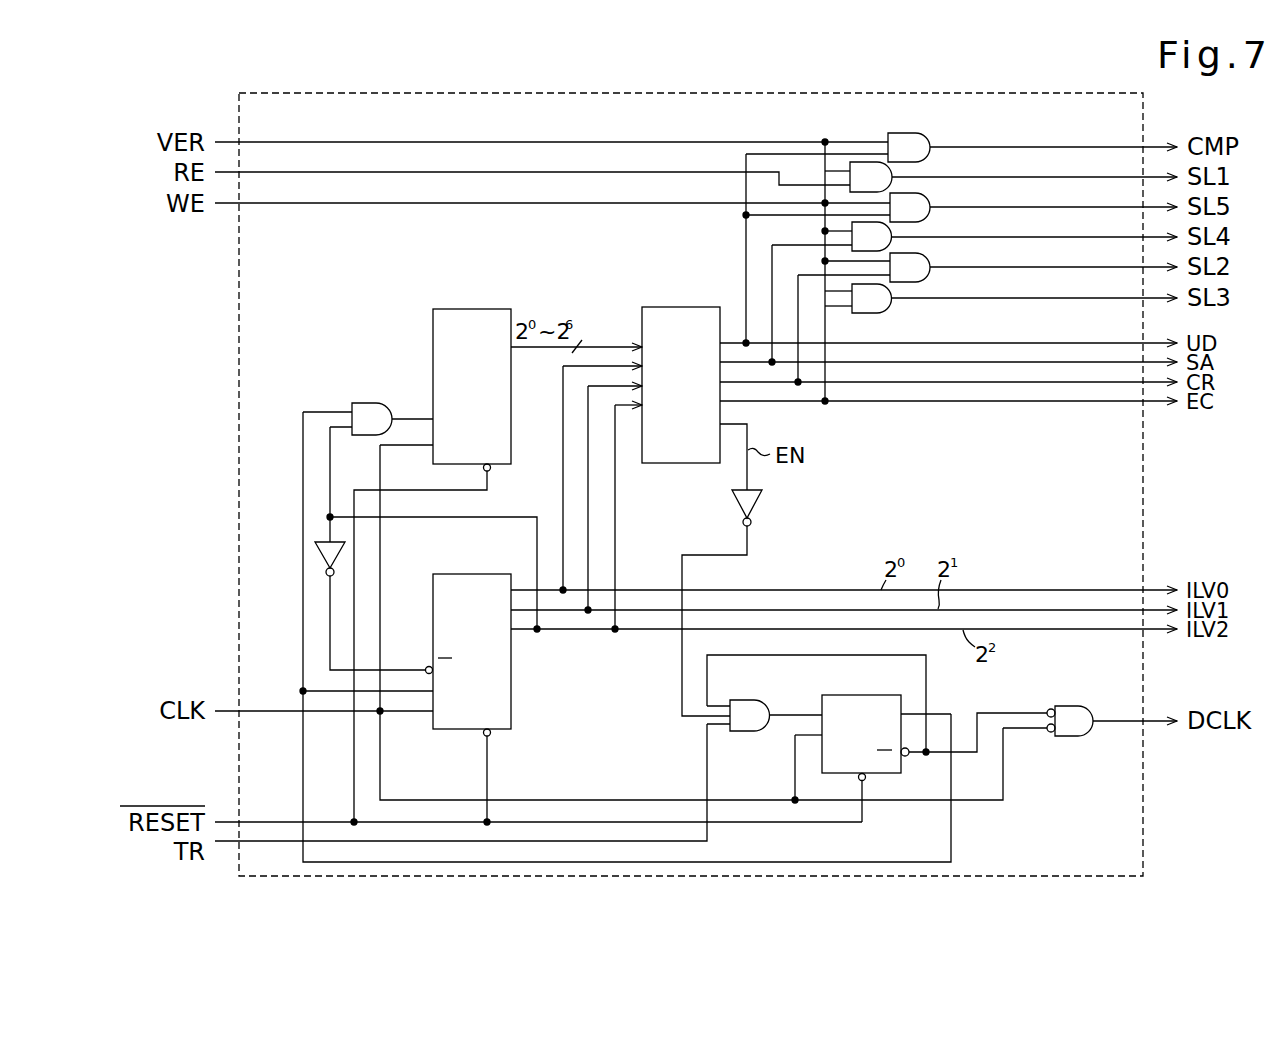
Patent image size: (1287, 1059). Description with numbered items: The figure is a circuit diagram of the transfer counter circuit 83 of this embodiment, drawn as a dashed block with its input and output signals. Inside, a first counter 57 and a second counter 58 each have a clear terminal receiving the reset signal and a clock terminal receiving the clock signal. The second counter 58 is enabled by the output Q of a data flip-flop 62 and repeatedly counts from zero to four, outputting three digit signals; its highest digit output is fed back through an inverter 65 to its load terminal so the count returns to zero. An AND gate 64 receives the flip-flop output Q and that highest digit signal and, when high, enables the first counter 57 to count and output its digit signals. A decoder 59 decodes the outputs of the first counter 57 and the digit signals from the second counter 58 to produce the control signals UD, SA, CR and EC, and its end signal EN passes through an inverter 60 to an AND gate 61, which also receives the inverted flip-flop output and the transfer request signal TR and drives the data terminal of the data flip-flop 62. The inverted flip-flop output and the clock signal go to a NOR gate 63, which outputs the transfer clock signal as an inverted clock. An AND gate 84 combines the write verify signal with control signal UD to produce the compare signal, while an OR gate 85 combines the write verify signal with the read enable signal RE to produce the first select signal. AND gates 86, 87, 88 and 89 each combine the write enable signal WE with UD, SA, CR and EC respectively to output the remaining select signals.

The first counter 57 is at (433, 320).
The second counter 58 is at (455, 572).
The decoder 59 is at (641, 315).
The inverter 60 is at (760, 506).
The AND gate 61 is at (745, 698).
The data flip-flop 62 is at (842, 693).
The NOR gate 63 is at (1072, 705).
The AND gate 64 is at (357, 400).
The inverter 65 is at (313, 552).
The transfer counter circuit 83 is at (1144, 487).
The AND gate 84 is at (912, 131).
The OR gate 85 is at (890, 170).
The AND gate 86 is at (912, 196).
The AND gate 87 is at (892, 230).
The AND gate 88 is at (912, 256).
The AND gate 89 is at (892, 303).